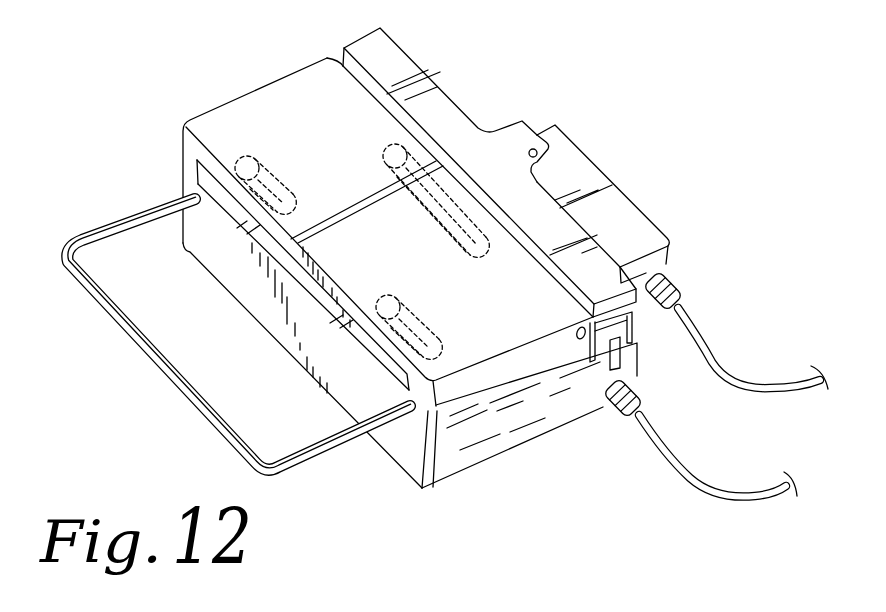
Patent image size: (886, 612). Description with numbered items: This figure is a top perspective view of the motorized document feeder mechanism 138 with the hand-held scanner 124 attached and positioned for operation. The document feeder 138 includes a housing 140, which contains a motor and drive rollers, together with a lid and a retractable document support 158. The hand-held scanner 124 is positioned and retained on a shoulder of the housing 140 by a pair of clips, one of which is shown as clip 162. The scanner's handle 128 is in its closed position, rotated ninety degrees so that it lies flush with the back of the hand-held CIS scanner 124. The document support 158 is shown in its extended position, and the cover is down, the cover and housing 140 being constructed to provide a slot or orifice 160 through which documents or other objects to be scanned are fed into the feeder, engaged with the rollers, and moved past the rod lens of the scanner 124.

The hand-held scanner 124 is at (526, 100).
The handle 128 is at (604, 174).
The motorized document feeder mechanism 138 is at (262, 71).
The housing 140 is at (494, 423).
The retractable document support 158 is at (89, 234).
The slot or orifice 160 is at (321, 297).
The clip 162 is at (624, 353).